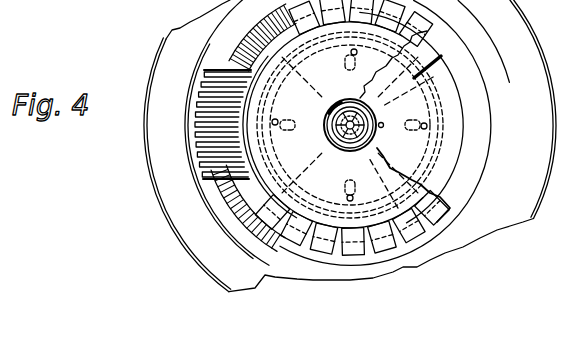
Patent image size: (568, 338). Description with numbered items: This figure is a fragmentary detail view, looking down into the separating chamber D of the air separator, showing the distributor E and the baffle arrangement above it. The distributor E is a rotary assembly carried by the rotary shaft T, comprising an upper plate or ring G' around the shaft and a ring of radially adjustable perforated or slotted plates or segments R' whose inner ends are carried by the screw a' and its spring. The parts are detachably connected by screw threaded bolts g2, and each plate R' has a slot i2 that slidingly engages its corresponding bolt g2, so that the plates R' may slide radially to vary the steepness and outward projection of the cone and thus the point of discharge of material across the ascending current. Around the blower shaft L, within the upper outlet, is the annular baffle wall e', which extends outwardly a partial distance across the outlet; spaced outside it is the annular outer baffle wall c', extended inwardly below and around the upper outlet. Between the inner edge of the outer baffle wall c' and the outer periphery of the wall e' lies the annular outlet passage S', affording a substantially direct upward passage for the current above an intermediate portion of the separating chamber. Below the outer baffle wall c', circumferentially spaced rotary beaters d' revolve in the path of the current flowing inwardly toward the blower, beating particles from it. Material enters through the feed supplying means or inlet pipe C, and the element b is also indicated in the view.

The inner or upper receptacle or separating chamber D is at (350, 146).
The feeder or distributor E is at (452, 157).
The rotary shaft T is at (411, 117).
The radially adjustable perforated or slotted plates or segments R' is at (434, 50).
The blower shaft L is at (350, 125).
The annular outer baffle wall c' is at (202, 124).
The screw a' is at (300, 84).
The annular baffle wall e' is at (287, 135).
The slot b is at (351, 58).
The feed supplying means or inlet pipe C is at (341, 186).
The screw threaded bolts g2 is at (427, 117).
The slot i2 is at (427, 137).
The upper plate or ring G' is at (431, 76).
The annular outlet passage S' is at (313, 159).
The rotary beaters d' is at (390, 148).